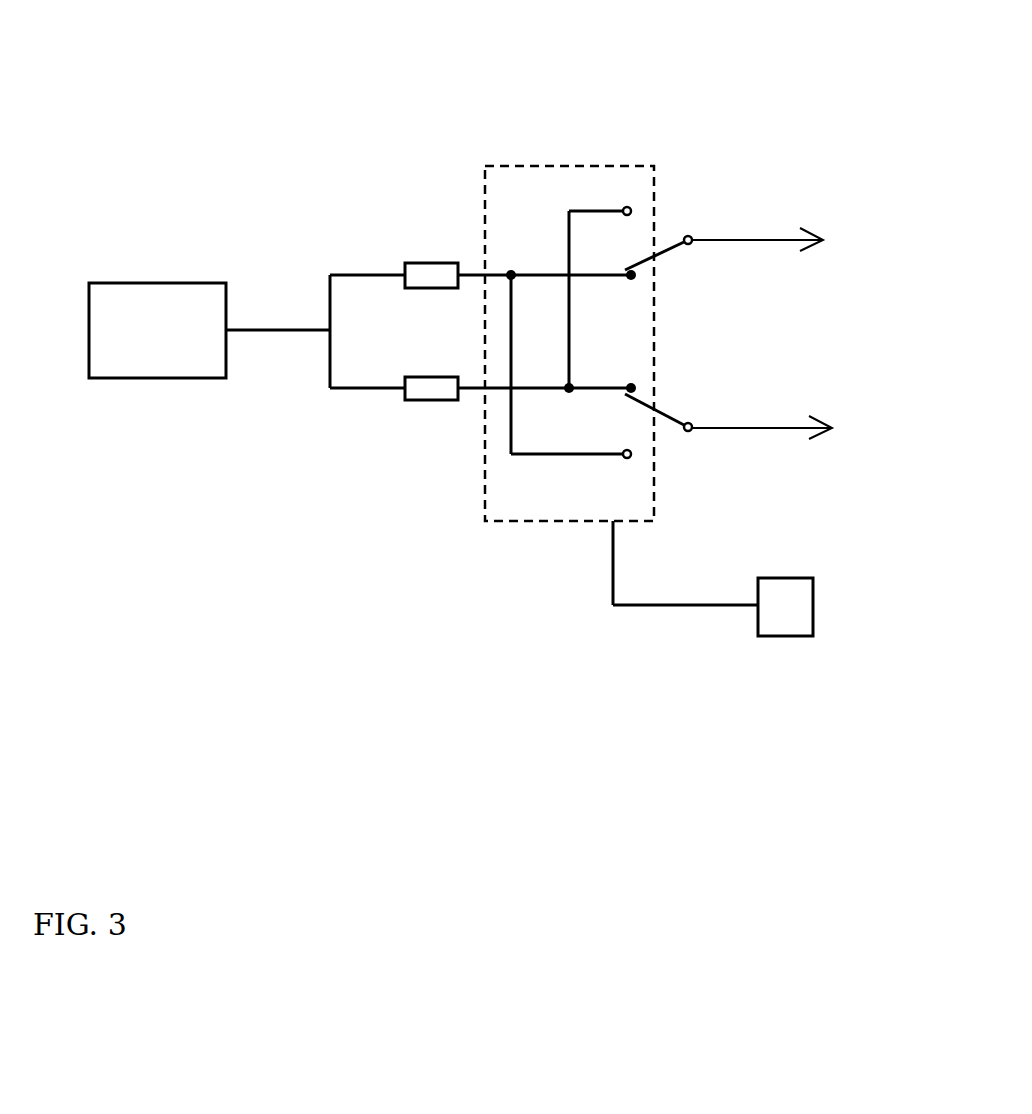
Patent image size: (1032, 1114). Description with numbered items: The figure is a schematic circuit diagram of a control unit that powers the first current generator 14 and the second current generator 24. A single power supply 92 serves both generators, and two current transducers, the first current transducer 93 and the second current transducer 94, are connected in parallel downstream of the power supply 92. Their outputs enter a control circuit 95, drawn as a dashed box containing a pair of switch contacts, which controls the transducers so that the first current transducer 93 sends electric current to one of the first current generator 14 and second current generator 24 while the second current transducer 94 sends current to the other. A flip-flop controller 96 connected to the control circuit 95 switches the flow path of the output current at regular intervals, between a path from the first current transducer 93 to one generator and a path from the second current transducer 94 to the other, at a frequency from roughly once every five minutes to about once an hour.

The power supply 92 is at (137, 297).
The first current transducer 93 is at (423, 273).
The second current transducer 94 is at (430, 390).
The control circuit 95 is at (620, 165).
The flip-flop controller 96 is at (781, 622).
The first current generator 14 is at (803, 239).
The second current generator 24 is at (803, 426).